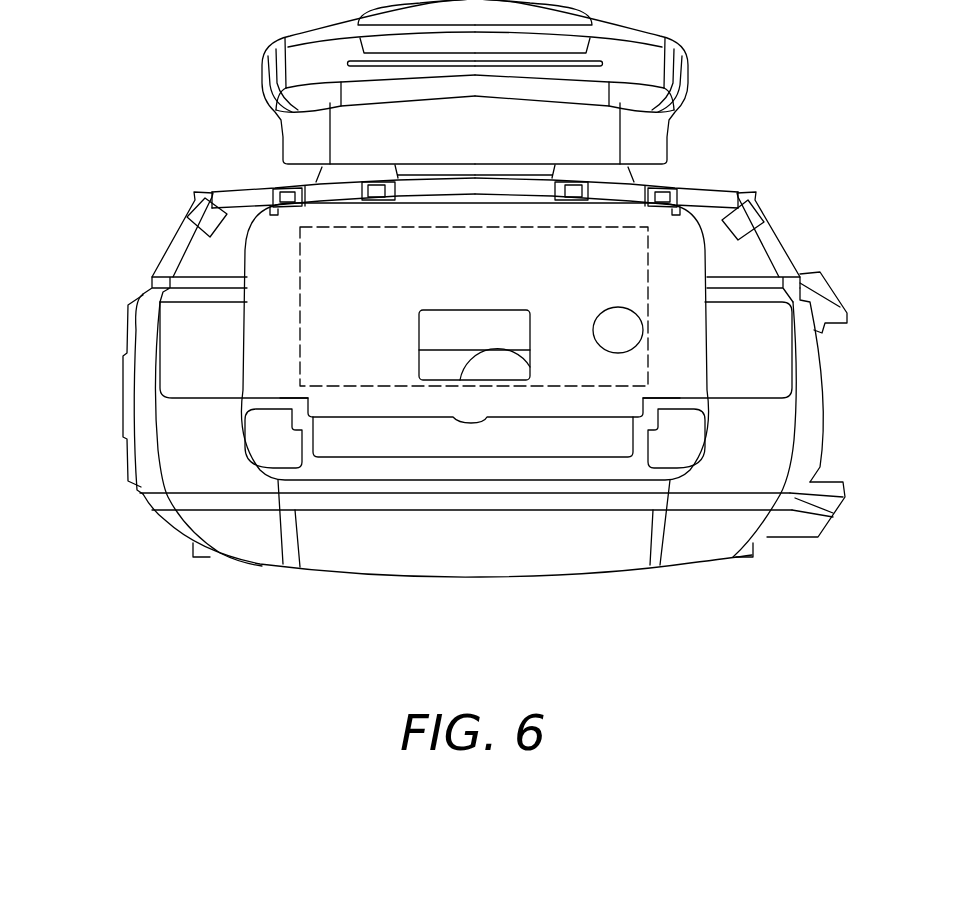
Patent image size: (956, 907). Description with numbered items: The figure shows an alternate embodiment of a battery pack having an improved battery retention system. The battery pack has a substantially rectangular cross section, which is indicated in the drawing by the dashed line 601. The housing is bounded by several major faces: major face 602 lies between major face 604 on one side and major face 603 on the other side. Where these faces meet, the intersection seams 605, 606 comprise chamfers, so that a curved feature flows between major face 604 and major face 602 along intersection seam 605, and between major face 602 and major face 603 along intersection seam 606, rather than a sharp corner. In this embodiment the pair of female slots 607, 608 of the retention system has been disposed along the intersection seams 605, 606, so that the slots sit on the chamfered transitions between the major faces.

The dashed line 601 is at (437, 229).
The major face 602 is at (238, 188).
The major face 603 is at (829, 408).
The major face 604 is at (123, 403).
The intersection seam 605 is at (784, 241).
The intersection seam 606 is at (165, 253).
The female slot 607 is at (203, 218).
The female slot 608 is at (745, 214).